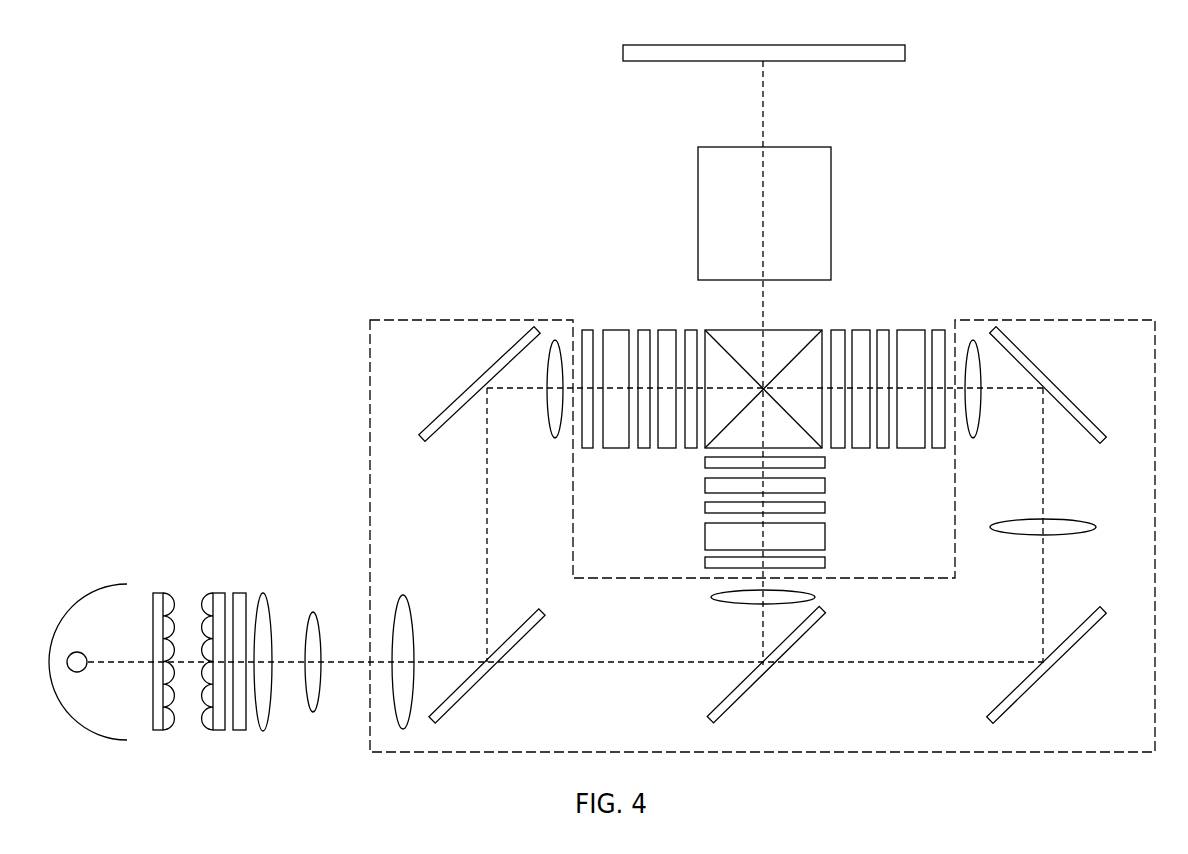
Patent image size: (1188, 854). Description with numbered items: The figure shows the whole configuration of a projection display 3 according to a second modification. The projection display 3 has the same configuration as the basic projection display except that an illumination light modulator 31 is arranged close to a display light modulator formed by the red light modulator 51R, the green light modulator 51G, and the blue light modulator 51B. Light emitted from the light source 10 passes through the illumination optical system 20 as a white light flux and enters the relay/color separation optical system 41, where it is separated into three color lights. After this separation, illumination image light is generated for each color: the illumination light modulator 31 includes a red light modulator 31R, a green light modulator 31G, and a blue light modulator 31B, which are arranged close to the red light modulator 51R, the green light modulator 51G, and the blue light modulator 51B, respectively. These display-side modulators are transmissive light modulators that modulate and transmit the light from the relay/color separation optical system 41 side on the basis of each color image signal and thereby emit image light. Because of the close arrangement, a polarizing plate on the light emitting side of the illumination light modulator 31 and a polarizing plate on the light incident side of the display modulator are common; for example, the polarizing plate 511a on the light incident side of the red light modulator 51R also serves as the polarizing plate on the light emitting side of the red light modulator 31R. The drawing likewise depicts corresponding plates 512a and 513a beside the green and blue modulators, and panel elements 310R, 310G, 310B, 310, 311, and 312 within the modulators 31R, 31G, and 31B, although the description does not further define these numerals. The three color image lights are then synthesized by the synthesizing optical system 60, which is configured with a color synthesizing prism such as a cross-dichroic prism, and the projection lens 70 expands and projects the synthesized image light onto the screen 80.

The projection display 3 is at (302, 166).
The light source 10 is at (96, 576).
The illumination optical system 20 is at (322, 570).
The relay/color separation optical system 41 is at (368, 357).
The illumination light modulator 31 is at (509, 350).
The blue light modulator 31B is at (484, 255).
The red light modulator 31R is at (1044, 250).
The green light modulator 31G is at (675, 700).
The blue liquid crystal panel 310B is at (617, 330).
The red liquid crystal panel 310R is at (912, 330).
The green liquid crystal panel 310G is at (705, 537).
The liquid crystal panel 310 is at (938, 330).
The incident-side polarizing plate 311 is at (705, 562).
The emission-side polarizing plate 312 is at (588, 330).
The blue light modulator 51B is at (697, 320).
The red light modulator 51R is at (889, 320).
The green light modulator 51G is at (832, 457).
The polarizing plate 511a is at (888, 329).
The green-side optical element plate 512a is at (705, 508).
The blue-side optical element plate 513a is at (646, 329).
The synthesizing optical system 60 is at (775, 328).
The projection lens 70 is at (831, 210).
The screen 80 is at (907, 52).